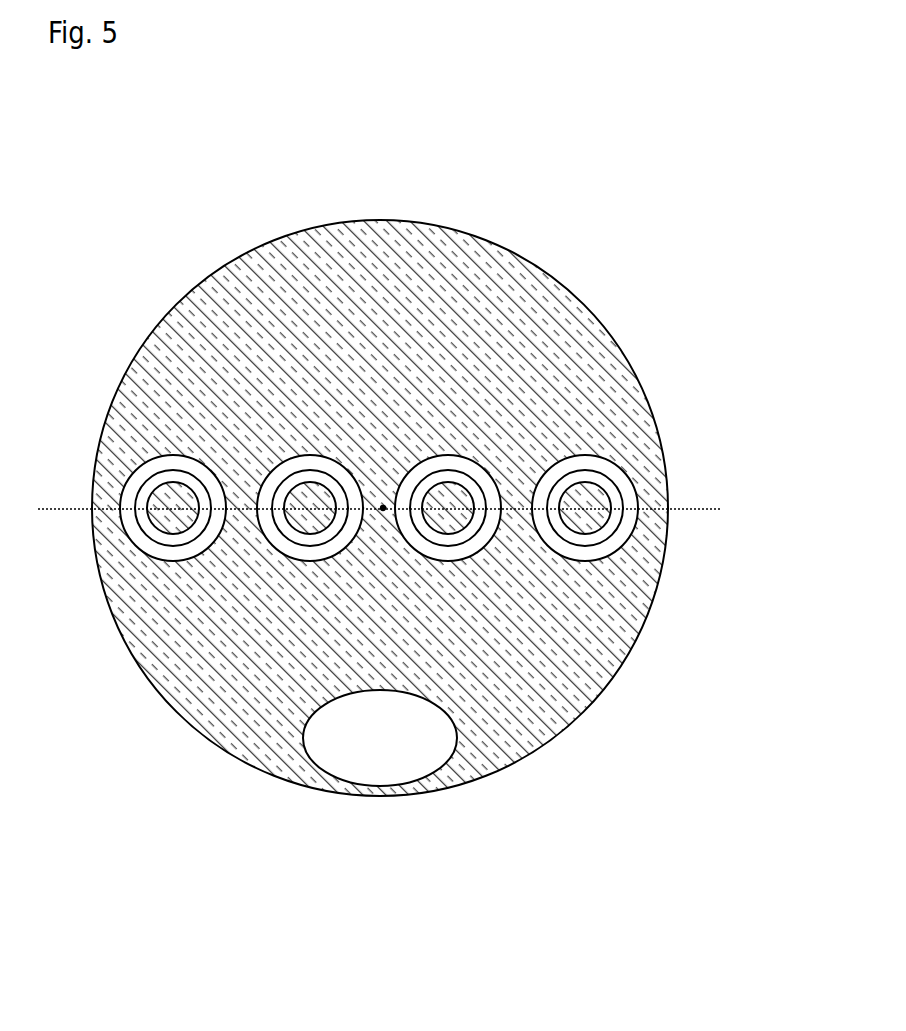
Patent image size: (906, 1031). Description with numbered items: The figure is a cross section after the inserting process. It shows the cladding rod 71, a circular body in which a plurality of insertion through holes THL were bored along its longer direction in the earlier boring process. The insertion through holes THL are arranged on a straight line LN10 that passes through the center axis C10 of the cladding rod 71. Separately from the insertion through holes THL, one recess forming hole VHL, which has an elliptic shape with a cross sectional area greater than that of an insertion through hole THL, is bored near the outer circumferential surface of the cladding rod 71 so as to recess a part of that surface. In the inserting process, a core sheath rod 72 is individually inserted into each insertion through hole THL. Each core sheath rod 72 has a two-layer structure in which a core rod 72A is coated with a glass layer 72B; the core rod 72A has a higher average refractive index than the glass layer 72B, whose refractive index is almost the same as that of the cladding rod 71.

The cladding rod 71 is at (637, 428).
The center axis C10 is at (383, 508).
The straight line LN10 is at (712, 508).
The insertion through hole THL is at (176, 458).
The core sheath rod 72 is at (388, 680).
The core rod 72A is at (174, 515).
The glass layer 72B is at (142, 515).
The recess forming hole VHL is at (380, 770).